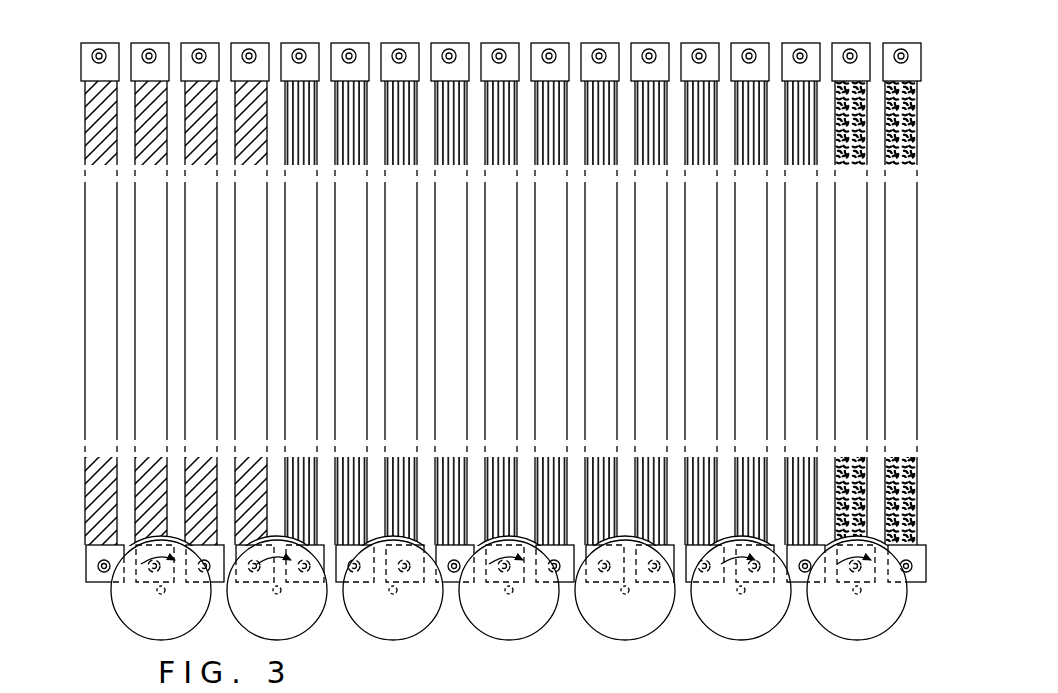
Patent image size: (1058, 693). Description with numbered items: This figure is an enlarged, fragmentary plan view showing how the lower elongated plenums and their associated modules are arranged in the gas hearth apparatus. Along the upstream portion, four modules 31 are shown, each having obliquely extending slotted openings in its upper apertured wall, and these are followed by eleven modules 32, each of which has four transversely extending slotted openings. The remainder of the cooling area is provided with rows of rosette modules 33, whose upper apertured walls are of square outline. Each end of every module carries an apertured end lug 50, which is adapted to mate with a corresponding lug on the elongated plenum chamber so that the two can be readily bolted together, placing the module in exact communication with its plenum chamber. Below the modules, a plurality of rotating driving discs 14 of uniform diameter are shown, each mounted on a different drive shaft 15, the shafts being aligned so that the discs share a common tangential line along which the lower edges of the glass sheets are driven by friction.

The module 31 is at (245, 37).
The module 32 is at (313, 37).
The rosette module 33 is at (860, 37).
The apertured end lug 50 is at (90, 72).
The driving disc 14 is at (425, 617).
The drive shaft 15 is at (735, 616).